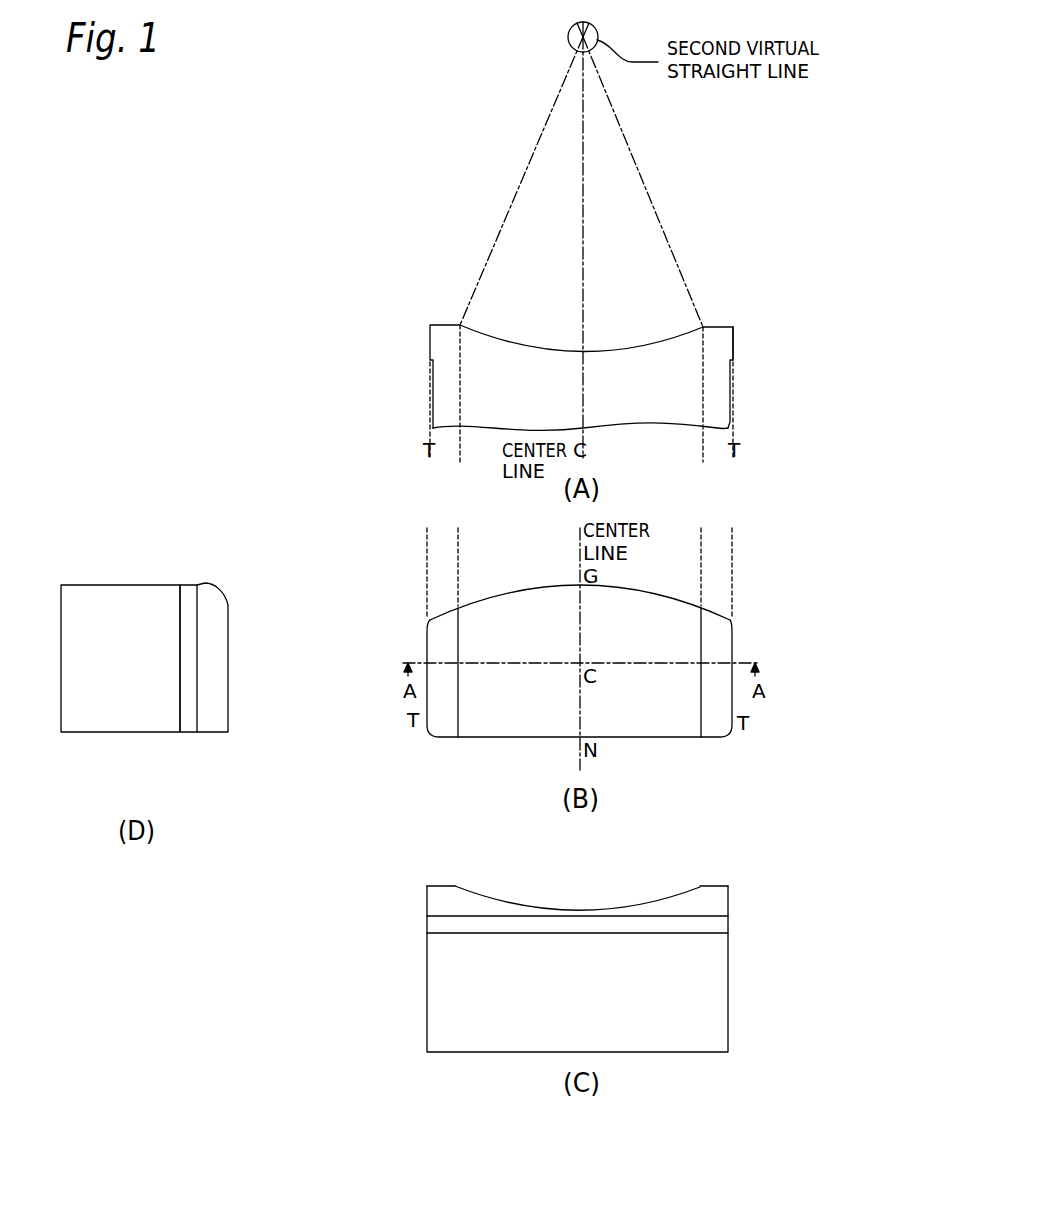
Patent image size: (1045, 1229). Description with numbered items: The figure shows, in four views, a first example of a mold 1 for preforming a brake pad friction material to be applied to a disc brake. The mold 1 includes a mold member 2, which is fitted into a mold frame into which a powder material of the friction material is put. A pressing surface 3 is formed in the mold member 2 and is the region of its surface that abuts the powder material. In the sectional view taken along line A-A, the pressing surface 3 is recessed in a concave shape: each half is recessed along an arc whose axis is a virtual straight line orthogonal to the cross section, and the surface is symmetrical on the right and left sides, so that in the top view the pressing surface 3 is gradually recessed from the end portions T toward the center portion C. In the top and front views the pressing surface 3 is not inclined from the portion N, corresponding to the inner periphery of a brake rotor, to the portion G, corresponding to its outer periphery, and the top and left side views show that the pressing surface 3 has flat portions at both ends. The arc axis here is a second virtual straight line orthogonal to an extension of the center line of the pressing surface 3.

The mold 1 is at (745, 422).
The mold member 2 is at (733, 350).
The pressing surface 3 is at (648, 343).